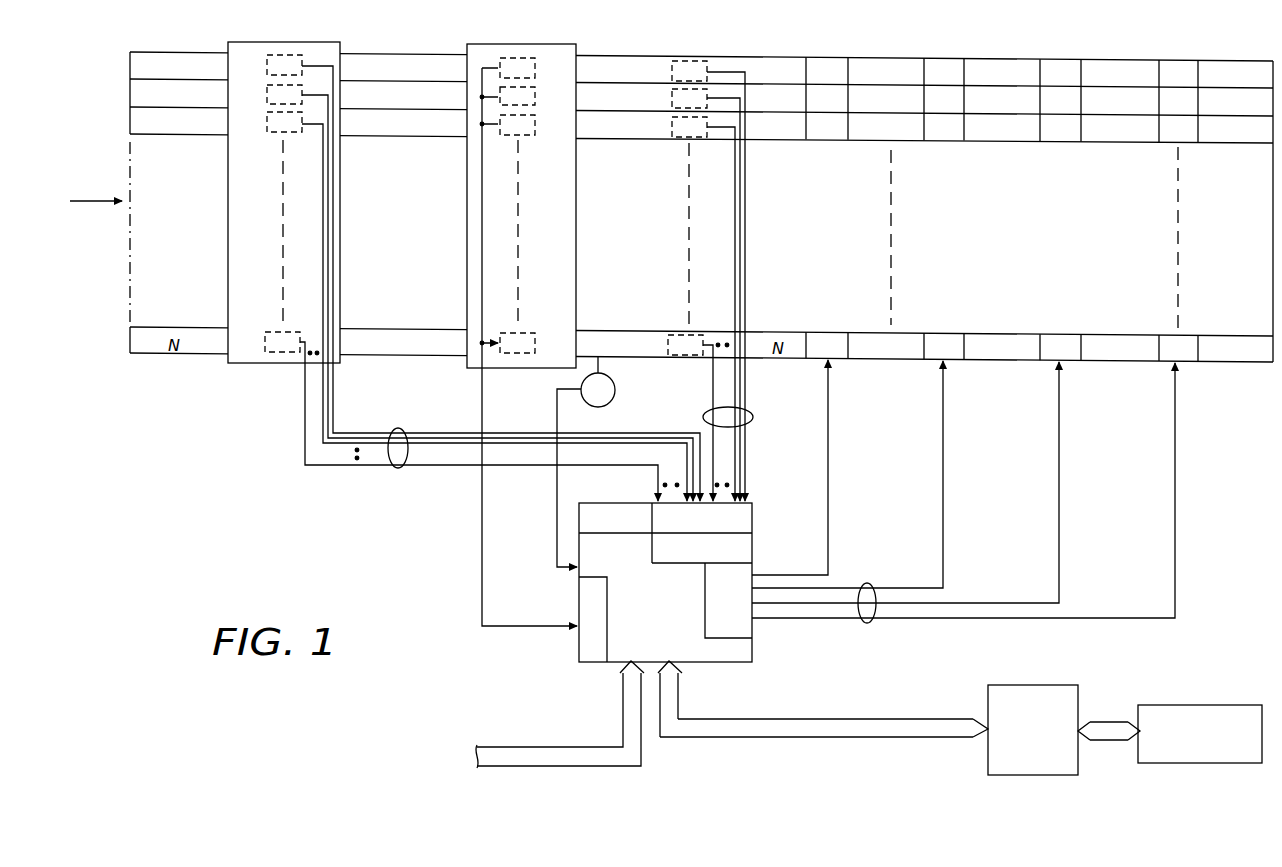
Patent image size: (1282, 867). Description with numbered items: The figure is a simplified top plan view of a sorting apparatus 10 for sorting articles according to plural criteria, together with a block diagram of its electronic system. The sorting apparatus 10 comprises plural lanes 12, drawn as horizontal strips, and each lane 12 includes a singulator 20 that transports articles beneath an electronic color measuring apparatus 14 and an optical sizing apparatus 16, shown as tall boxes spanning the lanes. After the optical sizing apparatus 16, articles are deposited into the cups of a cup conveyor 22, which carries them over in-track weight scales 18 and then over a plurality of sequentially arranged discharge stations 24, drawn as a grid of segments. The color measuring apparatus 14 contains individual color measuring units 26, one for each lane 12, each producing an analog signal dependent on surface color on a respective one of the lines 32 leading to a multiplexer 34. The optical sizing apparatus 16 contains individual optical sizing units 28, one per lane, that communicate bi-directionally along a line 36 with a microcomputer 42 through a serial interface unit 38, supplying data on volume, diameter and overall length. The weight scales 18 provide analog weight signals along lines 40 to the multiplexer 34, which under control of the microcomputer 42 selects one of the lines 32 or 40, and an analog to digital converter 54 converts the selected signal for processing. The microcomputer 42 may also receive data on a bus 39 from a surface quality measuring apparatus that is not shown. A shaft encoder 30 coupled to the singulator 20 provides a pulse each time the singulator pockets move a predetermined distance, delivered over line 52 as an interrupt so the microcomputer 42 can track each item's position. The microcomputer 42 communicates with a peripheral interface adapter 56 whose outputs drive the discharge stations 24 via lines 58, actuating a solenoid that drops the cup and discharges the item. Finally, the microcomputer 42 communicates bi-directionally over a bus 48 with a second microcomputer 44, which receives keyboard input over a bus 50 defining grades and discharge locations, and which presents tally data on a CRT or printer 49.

The sorting apparatus 10 is at (244, 418).
The lanes 12 is at (131, 98).
The electronic color measuring apparatus 14 is at (243, 367).
The optical sizing apparatus 16 is at (508, 372).
The weight scales 18 is at (677, 358).
The singulator 20 is at (396, 137).
The cup conveyor 22 is at (633, 139).
The discharge stations 24 is at (950, 143).
The color measuring units 26 is at (267, 96).
The optical sizing units 28 is at (536, 125).
The shaft encoder 30 is at (612, 398).
The lines 32 is at (397, 470).
The multiplexer 34 is at (743, 522).
The line 36 is at (492, 627).
The serial interface unit 38 is at (597, 657).
The bus 39 is at (632, 766).
The lines 40 is at (753, 416).
The microcomputer 42 is at (682, 602).
The microcomputer 44 is at (1065, 693).
The bus 48 is at (872, 723).
The CRT or printer 49 is at (1160, 705).
The bus 50 is at (1112, 742).
The line 52 is at (555, 532).
The analog to digital converter 54 is at (745, 552).
The peripheral interface adapter 56 is at (745, 628).
The lines 58 is at (867, 623).